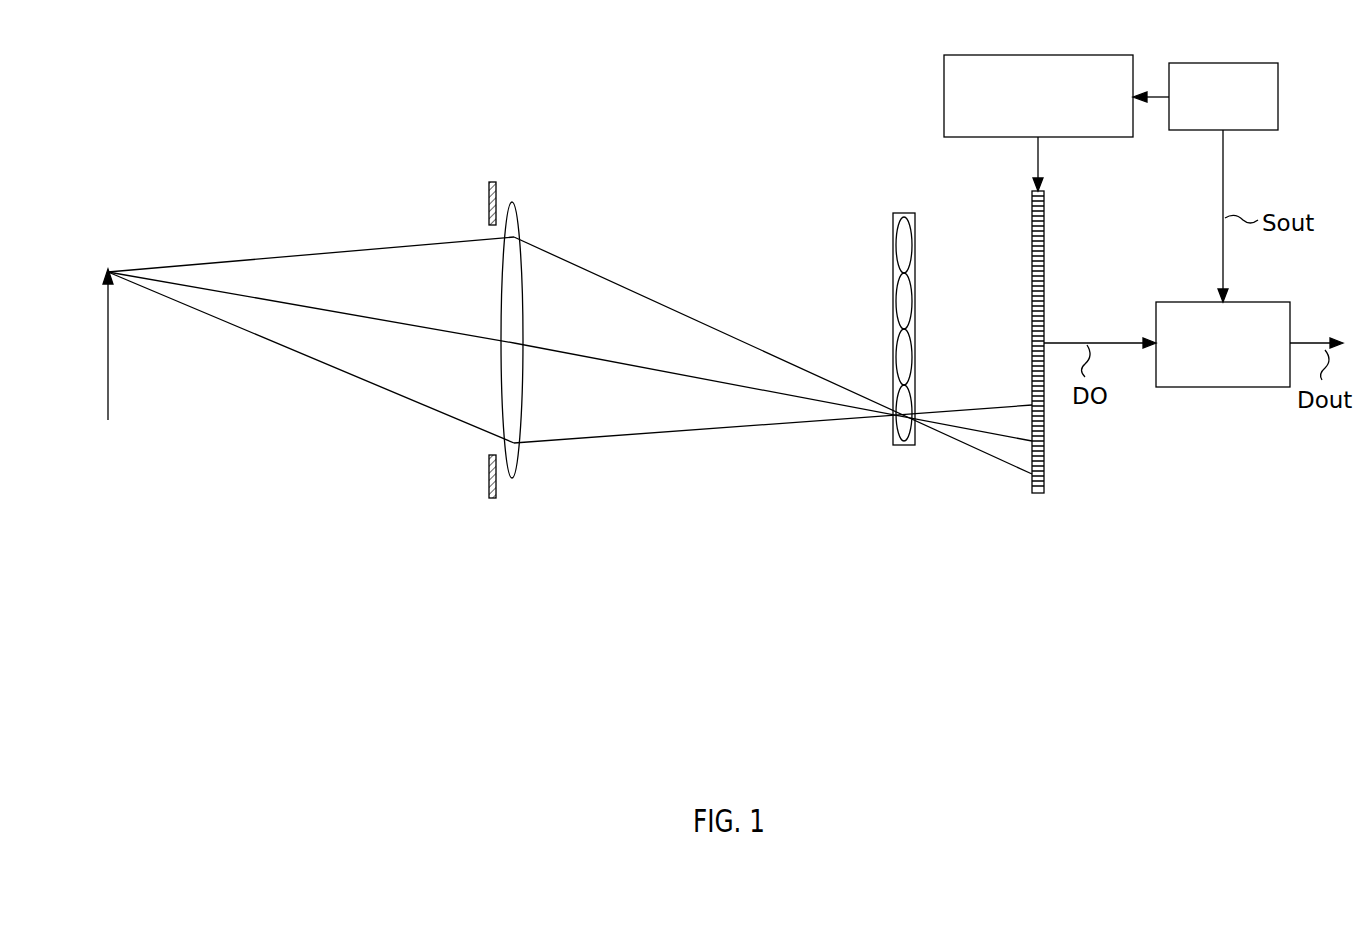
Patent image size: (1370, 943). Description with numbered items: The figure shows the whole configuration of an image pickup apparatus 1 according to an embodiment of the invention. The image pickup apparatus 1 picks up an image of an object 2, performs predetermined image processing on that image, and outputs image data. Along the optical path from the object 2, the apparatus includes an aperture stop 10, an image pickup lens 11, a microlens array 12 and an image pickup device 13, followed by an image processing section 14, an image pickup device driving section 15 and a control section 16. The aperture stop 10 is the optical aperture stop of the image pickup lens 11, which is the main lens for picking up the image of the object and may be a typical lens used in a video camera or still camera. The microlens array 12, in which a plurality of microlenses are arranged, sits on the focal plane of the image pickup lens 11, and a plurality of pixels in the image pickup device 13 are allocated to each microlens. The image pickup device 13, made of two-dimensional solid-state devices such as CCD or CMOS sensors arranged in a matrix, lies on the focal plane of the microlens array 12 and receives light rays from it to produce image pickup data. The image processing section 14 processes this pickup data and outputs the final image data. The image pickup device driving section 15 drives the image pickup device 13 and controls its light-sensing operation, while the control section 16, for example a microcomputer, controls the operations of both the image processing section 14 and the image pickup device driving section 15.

The image pickup apparatus 1 is at (314, 106).
The object 2 is at (108, 406).
The aperture stop 10 is at (493, 500).
The image pickup lens 11 is at (512, 202).
The microlens array 12 is at (843, 263).
The image pickup device 13 is at (1102, 466).
The image processing section 14 is at (1250, 302).
The image pickup device driving section 15 is at (1066, 55).
The control section 16 is at (1252, 63).